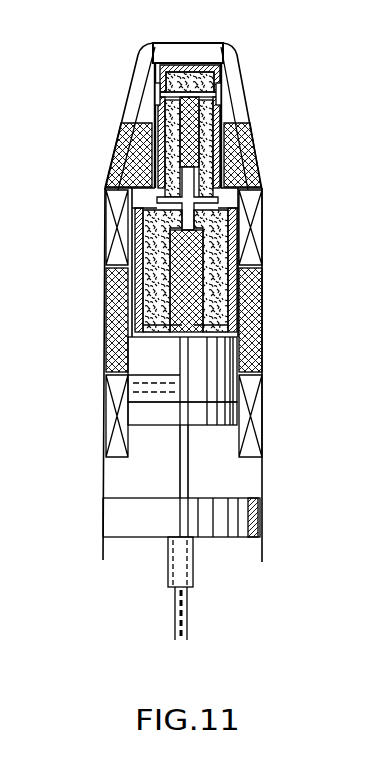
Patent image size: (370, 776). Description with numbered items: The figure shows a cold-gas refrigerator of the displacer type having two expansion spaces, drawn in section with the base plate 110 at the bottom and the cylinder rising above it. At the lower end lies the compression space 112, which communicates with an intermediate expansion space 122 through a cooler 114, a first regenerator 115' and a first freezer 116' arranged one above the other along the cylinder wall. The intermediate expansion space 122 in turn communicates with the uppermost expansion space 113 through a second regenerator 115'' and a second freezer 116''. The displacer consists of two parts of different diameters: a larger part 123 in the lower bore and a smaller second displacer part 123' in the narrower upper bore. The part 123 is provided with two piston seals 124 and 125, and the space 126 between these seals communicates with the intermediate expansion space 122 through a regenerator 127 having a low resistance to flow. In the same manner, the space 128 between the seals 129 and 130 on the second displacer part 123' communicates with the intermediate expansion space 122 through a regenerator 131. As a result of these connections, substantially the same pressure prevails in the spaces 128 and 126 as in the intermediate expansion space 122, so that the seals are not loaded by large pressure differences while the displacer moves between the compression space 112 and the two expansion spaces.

The base plate 110 is at (243, 520).
The compression space 112 is at (252, 476).
The expansion space 113 is at (203, 55).
The cooler 114 is at (256, 417).
The first regenerator 115' is at (221, 320).
The second regenerator 115'' is at (223, 155).
The first freezer 116' is at (222, 227).
The second freezer 116'' is at (223, 125).
The intermediate expansion space 122 is at (225, 200).
The displacer part 123 is at (130, 271).
The second displacer part 123' is at (129, 135).
The piston seal 124 is at (130, 353).
The piston seal 125 is at (128, 412).
The space between seals 126 is at (145, 386).
The regenerator 127 is at (238, 256).
The space between seals 128 is at (168, 89).
The seal 129 is at (162, 68).
The seal 130 is at (162, 98).
The regenerator 131 is at (214, 122).